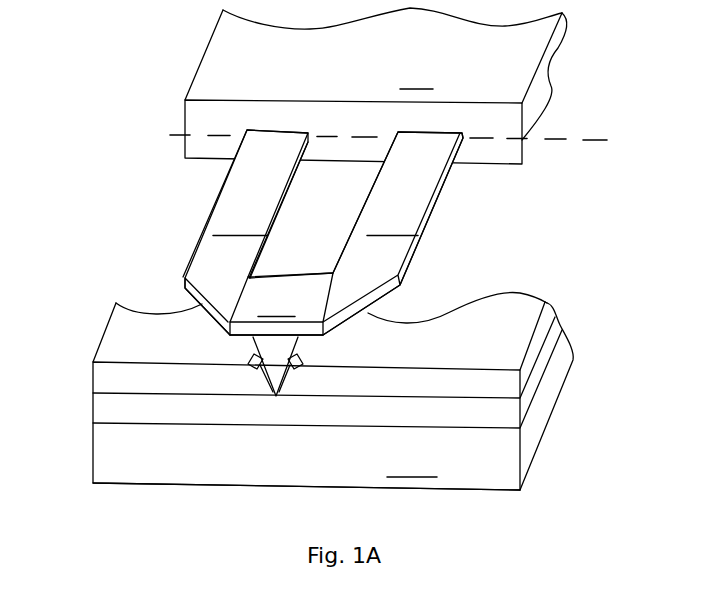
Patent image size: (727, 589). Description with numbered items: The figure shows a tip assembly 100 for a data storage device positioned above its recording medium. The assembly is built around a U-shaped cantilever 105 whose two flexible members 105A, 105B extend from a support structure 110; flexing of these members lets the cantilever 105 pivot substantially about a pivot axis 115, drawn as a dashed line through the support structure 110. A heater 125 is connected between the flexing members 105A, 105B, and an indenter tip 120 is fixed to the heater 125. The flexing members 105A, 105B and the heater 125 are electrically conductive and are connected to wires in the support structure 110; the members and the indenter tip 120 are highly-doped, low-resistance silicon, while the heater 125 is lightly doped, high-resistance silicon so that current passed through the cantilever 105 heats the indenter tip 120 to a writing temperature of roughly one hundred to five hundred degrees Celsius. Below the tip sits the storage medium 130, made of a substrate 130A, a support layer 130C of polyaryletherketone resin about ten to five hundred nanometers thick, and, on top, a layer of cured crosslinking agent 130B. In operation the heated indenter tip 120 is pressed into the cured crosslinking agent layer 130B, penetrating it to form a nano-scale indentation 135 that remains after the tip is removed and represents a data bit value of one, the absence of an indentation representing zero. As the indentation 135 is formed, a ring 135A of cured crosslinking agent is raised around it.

The tip assembly 100 is at (349, 249).
The U-shaped cantilever 105 is at (281, 228).
The flexible member 105A is at (245, 232).
The flexible member 105B is at (393, 233).
The support structure 110 is at (376, 86).
The pivot axis 115 is at (588, 138).
The indenter tip 120 is at (209, 377).
The heater 125 is at (281, 304).
The storage medium 130 is at (345, 391).
The substrate 130A is at (306, 471).
The cured crosslinking agent layer 130B is at (505, 386).
The support layer 130C is at (502, 415).
The indentation 135 is at (287, 377).
The ring 135A is at (296, 361).